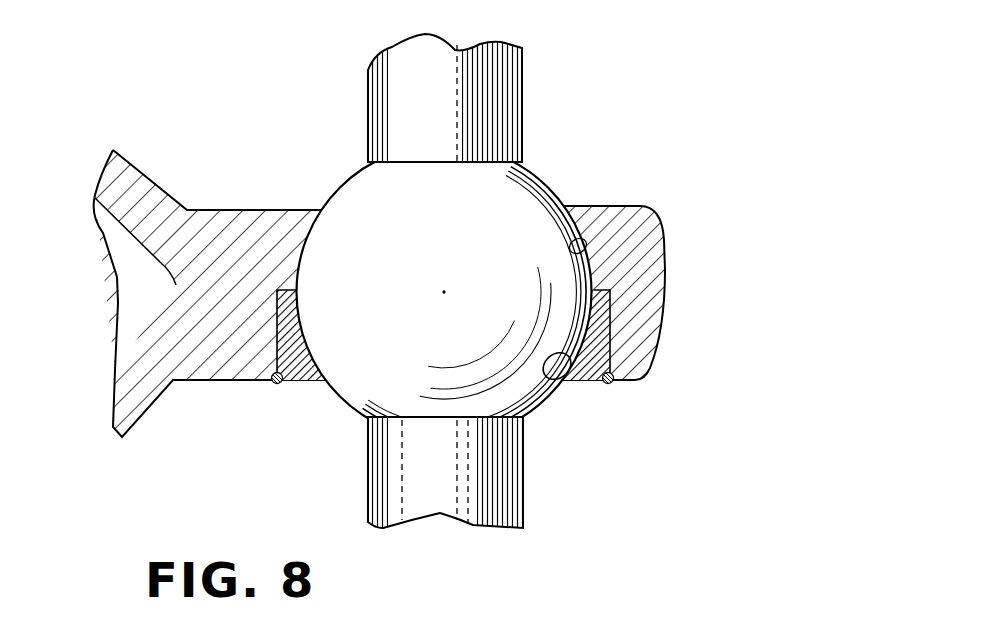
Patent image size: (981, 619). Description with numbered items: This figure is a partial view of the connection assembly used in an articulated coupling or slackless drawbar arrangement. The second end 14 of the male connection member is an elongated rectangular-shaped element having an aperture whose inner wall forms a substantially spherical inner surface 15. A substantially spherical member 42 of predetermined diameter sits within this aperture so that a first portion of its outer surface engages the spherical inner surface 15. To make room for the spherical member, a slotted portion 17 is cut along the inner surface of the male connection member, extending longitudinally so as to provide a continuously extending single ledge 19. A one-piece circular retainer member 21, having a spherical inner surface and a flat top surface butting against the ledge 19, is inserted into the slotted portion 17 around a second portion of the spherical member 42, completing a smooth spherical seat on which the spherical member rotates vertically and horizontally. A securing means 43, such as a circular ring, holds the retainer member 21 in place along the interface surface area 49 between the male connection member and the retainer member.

The second end of the male connection member 14 is at (655, 222).
The substantially spherical inner surface 15 is at (590, 257).
The slotted portion 17 is at (551, 378).
The ledge 19 is at (610, 311).
The retainer member 21 is at (277, 320).
The spherical member 42 is at (345, 192).
The securing means 43 is at (279, 386).
The interface surface area 49 is at (258, 392).